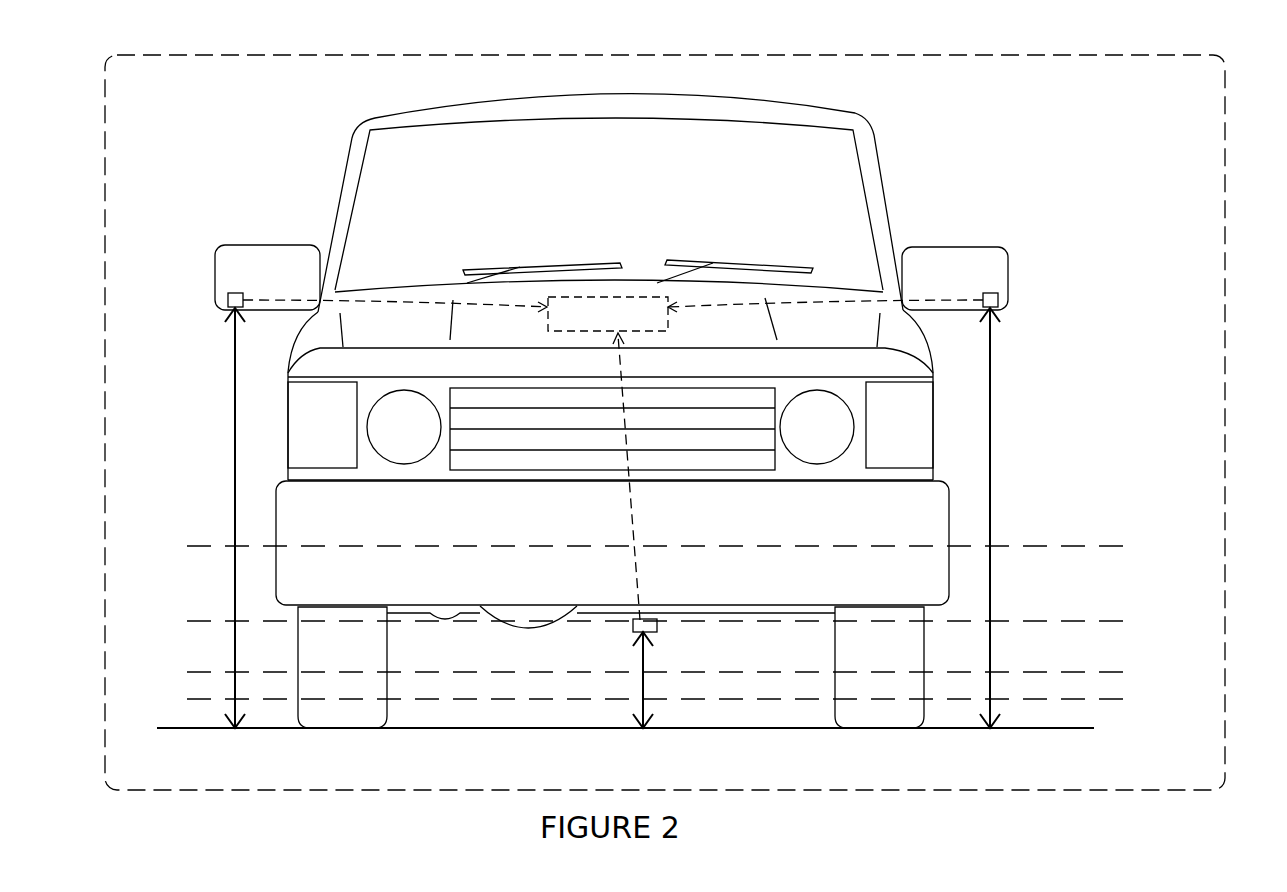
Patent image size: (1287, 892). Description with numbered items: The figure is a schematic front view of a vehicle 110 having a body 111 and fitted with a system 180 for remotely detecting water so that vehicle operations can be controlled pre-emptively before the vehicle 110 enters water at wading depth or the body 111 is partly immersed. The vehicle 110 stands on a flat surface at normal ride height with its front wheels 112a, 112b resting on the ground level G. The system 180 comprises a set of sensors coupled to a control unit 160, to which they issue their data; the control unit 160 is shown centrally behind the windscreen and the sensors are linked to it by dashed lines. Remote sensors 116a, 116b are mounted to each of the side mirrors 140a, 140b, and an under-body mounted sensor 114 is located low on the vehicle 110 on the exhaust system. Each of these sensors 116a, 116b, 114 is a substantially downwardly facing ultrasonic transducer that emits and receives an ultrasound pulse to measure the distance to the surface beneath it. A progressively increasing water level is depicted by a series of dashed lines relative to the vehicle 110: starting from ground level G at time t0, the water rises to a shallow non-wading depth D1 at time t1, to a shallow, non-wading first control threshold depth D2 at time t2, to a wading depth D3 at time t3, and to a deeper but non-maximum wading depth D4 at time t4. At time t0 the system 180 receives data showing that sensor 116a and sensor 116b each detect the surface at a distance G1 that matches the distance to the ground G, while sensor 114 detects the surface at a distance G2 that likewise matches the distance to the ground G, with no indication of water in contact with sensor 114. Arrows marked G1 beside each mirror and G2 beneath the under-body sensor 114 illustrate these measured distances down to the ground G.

The vehicle 110 is at (608, 406).
The body 111 is at (626, 112).
The right front wheel 112a is at (908, 664).
The left front wheel 112b is at (370, 664).
The under-body mounted sensor 114 is at (647, 622).
The remote sensor 116a is at (998, 298).
The remote sensor 116b is at (228, 300).
The side mirror 140a is at (982, 282).
The side mirror 140b is at (307, 281).
The control unit 160 is at (627, 328).
The system 180 is at (1225, 85).
The ground level G is at (826, 729).
The distance G1 is at (235, 372).
The distance G2 is at (645, 683).
The time t0 is at (1077, 729).
The time t1 is at (1118, 699).
The time t2 is at (1115, 672).
The time t3 is at (1115, 621).
The time t4 is at (1112, 546).
The shallow non-wading depth D1 is at (206, 698).
The first control threshold depth D2 is at (205, 671).
The wading depth D3 is at (201, 620).
The non-maximum wading depth D4 is at (197, 545).